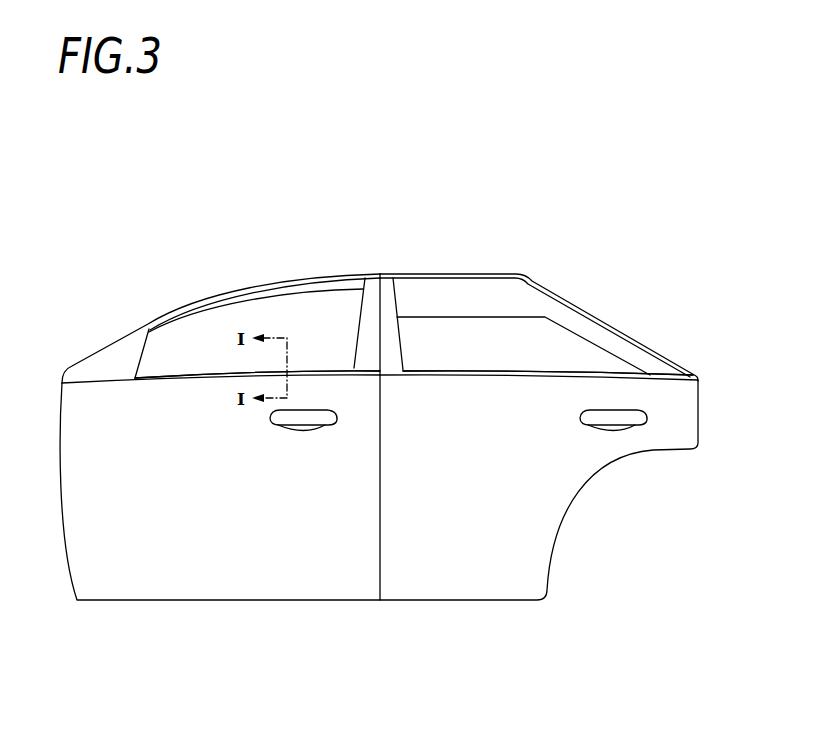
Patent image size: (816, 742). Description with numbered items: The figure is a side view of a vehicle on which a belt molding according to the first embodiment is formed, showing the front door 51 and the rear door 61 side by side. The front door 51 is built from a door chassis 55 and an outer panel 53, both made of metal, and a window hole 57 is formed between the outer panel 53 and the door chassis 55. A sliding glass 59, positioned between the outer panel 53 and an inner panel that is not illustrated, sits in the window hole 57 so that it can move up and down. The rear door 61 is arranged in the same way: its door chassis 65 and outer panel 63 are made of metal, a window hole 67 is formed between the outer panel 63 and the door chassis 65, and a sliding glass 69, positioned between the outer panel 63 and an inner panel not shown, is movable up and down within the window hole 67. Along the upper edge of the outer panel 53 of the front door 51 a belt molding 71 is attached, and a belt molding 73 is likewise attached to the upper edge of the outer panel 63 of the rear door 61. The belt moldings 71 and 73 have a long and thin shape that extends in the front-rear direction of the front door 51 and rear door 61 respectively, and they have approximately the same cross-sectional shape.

The front door 51 is at (190, 459).
The outer panel 53 is at (225, 578).
The door chassis 55 is at (183, 303).
The window hole 57 is at (320, 290).
The sliding glass 59 is at (217, 345).
The rear door 61 is at (575, 459).
The outer panel 63 is at (472, 578).
The door chassis 65 is at (568, 293).
The window hole 67 is at (463, 307).
The sliding glass 69 is at (540, 355).
The belt molding 71 is at (160, 372).
The belt molding 73 is at (570, 373).